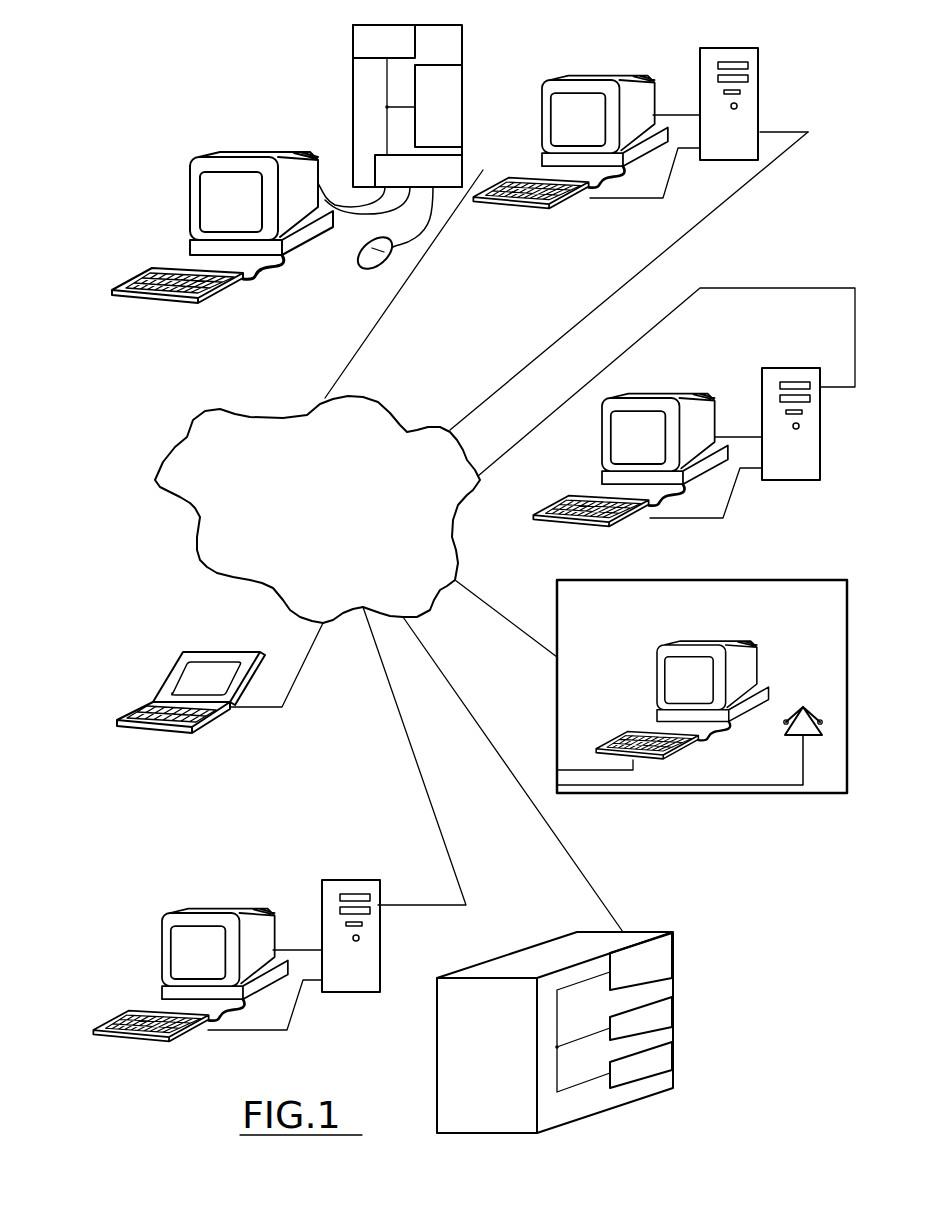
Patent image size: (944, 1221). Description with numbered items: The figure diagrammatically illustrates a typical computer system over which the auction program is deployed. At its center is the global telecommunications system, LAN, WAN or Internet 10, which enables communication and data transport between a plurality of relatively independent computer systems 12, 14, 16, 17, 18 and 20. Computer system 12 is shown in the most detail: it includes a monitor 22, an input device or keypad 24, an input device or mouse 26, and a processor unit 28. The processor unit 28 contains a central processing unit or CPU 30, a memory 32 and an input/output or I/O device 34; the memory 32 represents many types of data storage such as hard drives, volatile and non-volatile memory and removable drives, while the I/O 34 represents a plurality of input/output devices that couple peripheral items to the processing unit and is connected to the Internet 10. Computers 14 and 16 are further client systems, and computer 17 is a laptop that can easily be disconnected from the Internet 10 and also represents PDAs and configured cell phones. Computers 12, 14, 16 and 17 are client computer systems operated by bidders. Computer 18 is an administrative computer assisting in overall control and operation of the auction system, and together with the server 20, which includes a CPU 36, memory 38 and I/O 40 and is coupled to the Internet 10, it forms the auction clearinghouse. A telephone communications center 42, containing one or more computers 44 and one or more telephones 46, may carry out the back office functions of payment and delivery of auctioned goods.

The Internet 10 is at (360, 520).
The computer system 12 is at (197, 157).
The computer system 14 is at (567, 80).
The computer system 16 is at (602, 468).
The laptop computer 17 is at (160, 677).
The administrative computer 18 is at (177, 920).
The server 20 is at (563, 938).
The monitor 22 is at (190, 207).
The keypad 24 is at (152, 268).
The mouse 26 is at (357, 258).
The processor unit 28 is at (353, 100).
The central processing unit 30 is at (353, 45).
The memory 32 is at (462, 107).
The input/output device 34 is at (450, 187).
The CPU 36 is at (673, 1058).
The memory 38 is at (673, 1007).
The I/O 40 is at (673, 952).
The telephone communications center 42 is at (712, 580).
The computer 44 is at (657, 690).
The telephone 46 is at (803, 735).